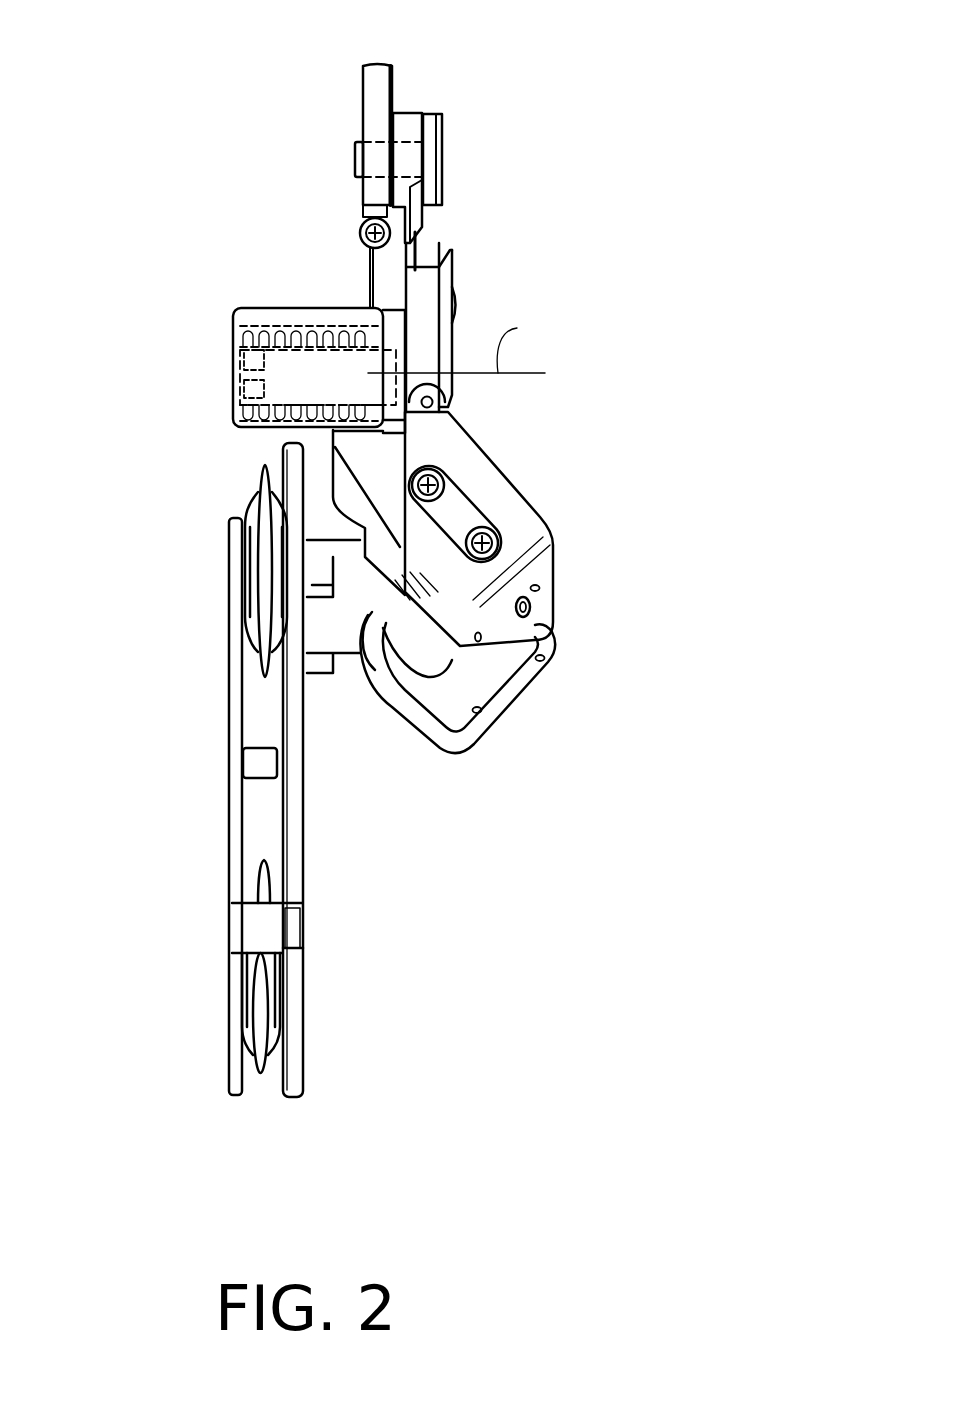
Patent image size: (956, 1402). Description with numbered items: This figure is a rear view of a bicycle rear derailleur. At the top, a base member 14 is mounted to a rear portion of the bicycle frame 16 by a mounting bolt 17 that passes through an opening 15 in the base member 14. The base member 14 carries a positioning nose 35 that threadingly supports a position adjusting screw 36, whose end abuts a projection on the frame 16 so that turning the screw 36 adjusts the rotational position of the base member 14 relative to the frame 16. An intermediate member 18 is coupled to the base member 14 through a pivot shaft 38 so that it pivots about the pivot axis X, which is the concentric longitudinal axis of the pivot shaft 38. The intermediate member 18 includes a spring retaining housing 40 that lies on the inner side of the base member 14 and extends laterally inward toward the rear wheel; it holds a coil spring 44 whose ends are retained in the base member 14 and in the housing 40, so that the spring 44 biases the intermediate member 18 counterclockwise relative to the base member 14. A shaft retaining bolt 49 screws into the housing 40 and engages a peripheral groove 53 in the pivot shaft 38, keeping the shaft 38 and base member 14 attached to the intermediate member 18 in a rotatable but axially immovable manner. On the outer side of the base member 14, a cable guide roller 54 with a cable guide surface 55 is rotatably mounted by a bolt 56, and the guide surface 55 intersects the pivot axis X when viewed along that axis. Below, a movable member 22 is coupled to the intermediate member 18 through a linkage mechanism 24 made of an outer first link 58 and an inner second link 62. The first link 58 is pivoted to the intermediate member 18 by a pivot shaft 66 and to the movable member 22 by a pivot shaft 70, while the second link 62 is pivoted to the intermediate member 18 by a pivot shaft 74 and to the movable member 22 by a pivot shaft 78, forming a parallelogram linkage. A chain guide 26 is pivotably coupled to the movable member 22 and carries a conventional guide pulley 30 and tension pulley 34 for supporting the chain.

The base member 14 is at (421, 225).
The opening 15 is at (402, 135).
The bicycle frame 16 is at (368, 95).
The mounting bolt 17 is at (440, 148).
The intermediate member 18 is at (500, 492).
The movable member 22 is at (470, 745).
The linkage mechanism 24 is at (580, 552).
The chain guide 26 is at (218, 723).
The guide pulley 30 is at (253, 513).
The tension pulley 34 is at (263, 1073).
The positioning nose 35 is at (360, 238).
The position adjusting screw 36 is at (368, 220).
The pivot shaft 38 is at (333, 365).
The spring retaining housing 40 is at (214, 306).
The coil spring 44 is at (305, 318).
The shaft retaining bolt 49 is at (240, 345).
The peripheral groove 53 is at (240, 396).
The cable guide roller 54 is at (454, 282).
The cable guide surface 55 is at (436, 250).
The bolt 56 is at (457, 322).
The first link 58 is at (553, 612).
The second link 62 is at (383, 662).
The pivot shaft 66 is at (540, 588).
The pivot shaft 70 is at (546, 658).
The pivot shaft 74 is at (427, 713).
The pivot shaft 78 is at (481, 714).